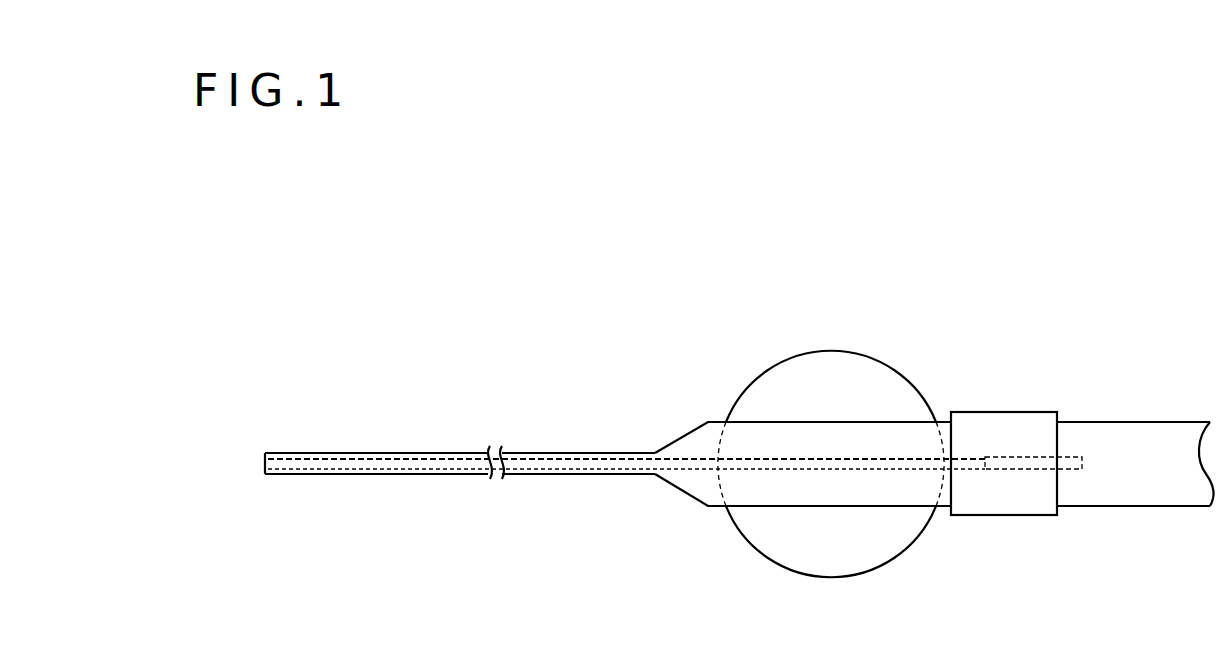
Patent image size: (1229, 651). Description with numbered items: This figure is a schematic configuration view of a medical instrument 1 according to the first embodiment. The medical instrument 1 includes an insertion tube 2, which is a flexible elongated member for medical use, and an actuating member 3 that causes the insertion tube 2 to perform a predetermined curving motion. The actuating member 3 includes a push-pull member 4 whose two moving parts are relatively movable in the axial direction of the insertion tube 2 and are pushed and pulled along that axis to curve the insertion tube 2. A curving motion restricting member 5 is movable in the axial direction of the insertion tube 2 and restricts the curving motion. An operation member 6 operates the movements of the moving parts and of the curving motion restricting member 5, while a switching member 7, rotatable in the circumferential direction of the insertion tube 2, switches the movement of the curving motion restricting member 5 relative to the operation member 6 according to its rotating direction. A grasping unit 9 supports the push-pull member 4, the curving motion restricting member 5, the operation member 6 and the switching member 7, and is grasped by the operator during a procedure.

The medical instrument 1 is at (715, 268).
The insertion tube 2 is at (278, 453).
The actuating member 3 is at (947, 350).
The push-pull member 4 is at (340, 461).
The curving motion restricting member 5 is at (428, 462).
The operation member 6 is at (853, 351).
The switching member 7 is at (1014, 412).
The grasping unit 9 is at (1131, 421).